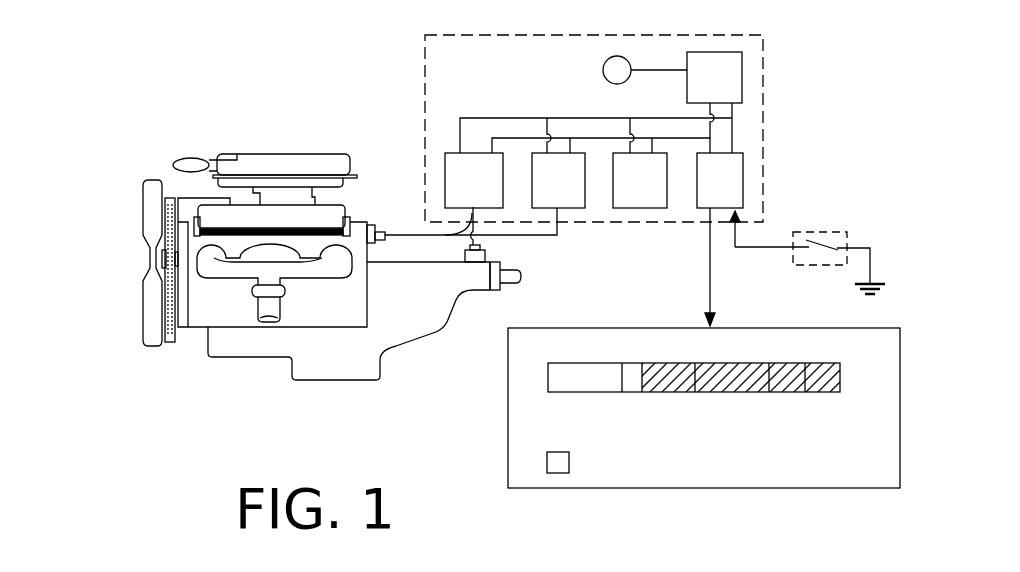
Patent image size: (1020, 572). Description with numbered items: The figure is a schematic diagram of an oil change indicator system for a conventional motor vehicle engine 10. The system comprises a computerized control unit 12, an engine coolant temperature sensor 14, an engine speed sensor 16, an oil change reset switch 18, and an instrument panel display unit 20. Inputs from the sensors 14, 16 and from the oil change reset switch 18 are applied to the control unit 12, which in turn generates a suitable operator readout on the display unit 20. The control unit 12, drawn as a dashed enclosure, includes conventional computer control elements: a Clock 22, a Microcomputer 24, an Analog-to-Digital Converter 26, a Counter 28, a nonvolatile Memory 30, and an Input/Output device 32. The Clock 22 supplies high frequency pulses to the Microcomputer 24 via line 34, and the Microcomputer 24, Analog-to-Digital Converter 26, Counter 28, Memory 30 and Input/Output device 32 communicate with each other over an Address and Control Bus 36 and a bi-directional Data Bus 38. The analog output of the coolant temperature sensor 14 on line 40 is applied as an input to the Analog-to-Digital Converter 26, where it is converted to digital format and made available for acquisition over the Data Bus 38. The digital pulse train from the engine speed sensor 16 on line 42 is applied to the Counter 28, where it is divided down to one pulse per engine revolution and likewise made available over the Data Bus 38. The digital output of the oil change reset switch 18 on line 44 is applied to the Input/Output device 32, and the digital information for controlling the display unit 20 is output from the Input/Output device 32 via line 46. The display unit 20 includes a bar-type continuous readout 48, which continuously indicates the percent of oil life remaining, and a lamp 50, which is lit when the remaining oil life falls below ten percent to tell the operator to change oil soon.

The motor vehicle engine 10 is at (290, 152).
The computerized control unit 12 is at (531, 32).
The engine coolant temperature sensor 14 is at (371, 224).
The engine speed sensor 16 is at (489, 292).
The oil change reset switch 18 is at (850, 242).
The instrument panel display unit 20 is at (662, 489).
The clock 22 is at (604, 84).
The microcomputer 24 is at (743, 87).
The analog-to-digital converter 26 is at (572, 200).
The counter 28 is at (487, 200).
The nonvolatile memory 30 is at (632, 200).
The input/output device 32 is at (735, 195).
The line 34 is at (650, 70).
The address and control bus 36 is at (460, 118).
The data bus 38 is at (517, 138).
The line 40 is at (418, 235).
The line 42 is at (455, 236).
The line 44 is at (786, 250).
The line 46 is at (712, 257).
The bar-type continuous readout 48 is at (843, 389).
The lamp 50 is at (560, 474).